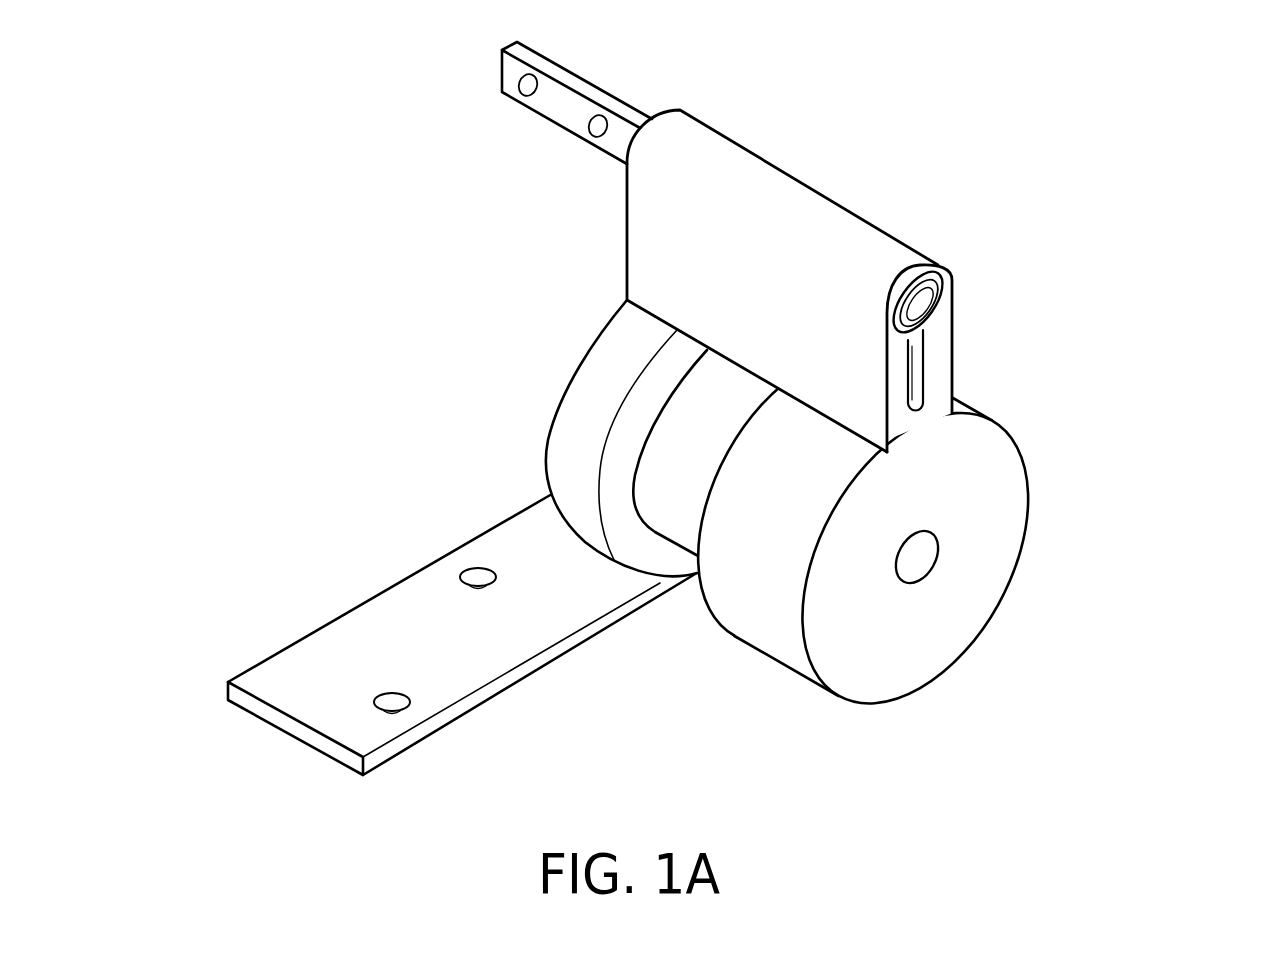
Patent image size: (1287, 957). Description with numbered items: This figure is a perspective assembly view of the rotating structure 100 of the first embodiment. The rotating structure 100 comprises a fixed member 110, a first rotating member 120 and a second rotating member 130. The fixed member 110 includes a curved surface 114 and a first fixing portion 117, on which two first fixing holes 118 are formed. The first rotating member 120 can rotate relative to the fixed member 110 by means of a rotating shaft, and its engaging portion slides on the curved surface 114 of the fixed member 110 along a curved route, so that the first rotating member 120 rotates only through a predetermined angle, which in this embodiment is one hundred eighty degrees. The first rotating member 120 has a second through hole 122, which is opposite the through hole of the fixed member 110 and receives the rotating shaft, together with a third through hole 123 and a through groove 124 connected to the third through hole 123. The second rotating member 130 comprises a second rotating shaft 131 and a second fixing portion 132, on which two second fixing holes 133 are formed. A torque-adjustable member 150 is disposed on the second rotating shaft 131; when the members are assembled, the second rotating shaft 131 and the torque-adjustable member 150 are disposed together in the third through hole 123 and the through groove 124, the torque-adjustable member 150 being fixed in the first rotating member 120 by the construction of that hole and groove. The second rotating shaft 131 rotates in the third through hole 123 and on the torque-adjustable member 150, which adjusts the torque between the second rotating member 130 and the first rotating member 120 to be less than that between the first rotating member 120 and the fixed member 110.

The rotating structure 100 is at (201, 91).
The fixed member 110 is at (600, 321).
The curved surface 114 is at (677, 445).
The first fixing portion 117 is at (270, 673).
The first fixing holes 118 is at (388, 693).
The first rotating member 120 is at (968, 652).
The second through hole 122 is at (922, 560).
The third through hole 123 is at (942, 292).
The through groove 124 is at (927, 369).
The second rotating member 130 is at (602, 148).
The second rotating shaft 131 is at (917, 308).
The second fixing portion 132 is at (557, 73).
The second fixing holes 133 is at (601, 126).
The torque-adjustable member 150 is at (933, 280).